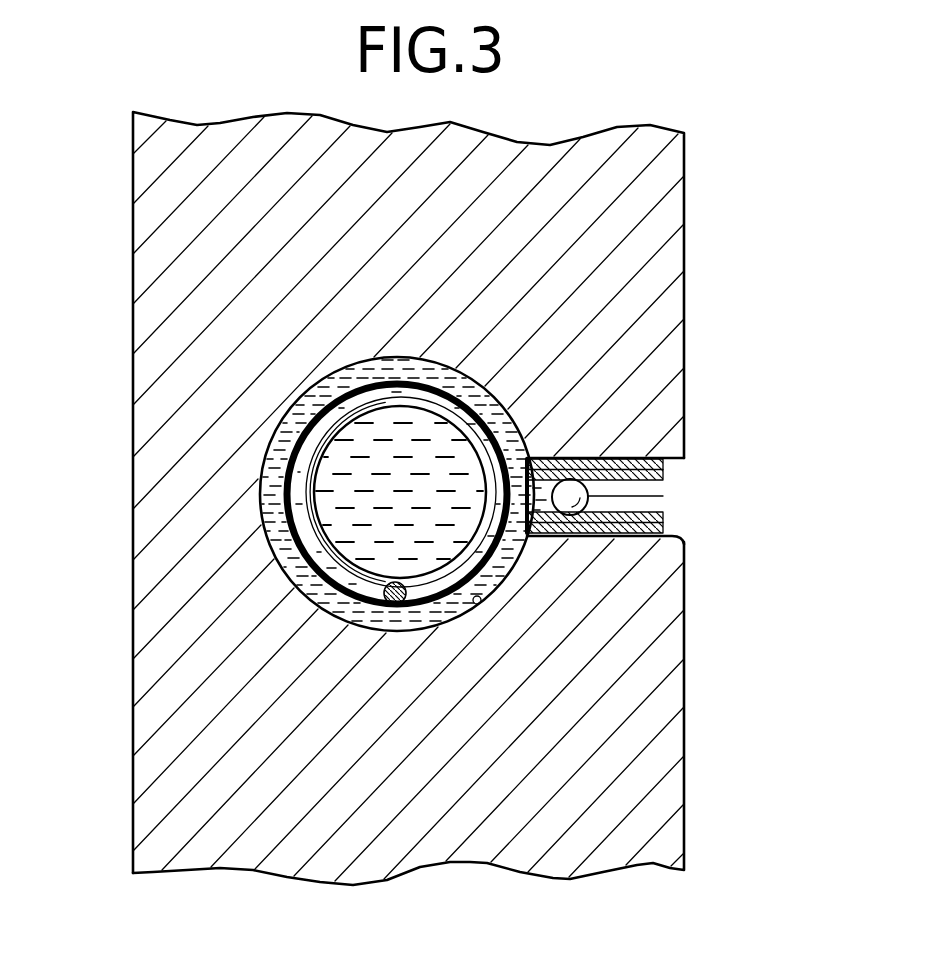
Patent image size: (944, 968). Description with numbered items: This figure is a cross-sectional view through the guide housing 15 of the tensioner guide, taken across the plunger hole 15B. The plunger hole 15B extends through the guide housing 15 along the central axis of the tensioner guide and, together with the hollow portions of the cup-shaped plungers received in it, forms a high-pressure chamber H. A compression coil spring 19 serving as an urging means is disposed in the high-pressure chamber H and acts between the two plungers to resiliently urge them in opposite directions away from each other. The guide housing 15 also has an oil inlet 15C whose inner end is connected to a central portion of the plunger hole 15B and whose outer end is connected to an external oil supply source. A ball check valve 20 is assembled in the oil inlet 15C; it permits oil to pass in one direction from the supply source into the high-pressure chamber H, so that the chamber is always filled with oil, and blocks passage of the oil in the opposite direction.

The guide housing 15 is at (133, 333).
The plunger hole 15B is at (481, 603).
The oil inlet 15C is at (680, 534).
The compression coil spring 19 is at (322, 558).
The ball check valve 20 is at (592, 446).
The high-pressure chamber H is at (335, 493).